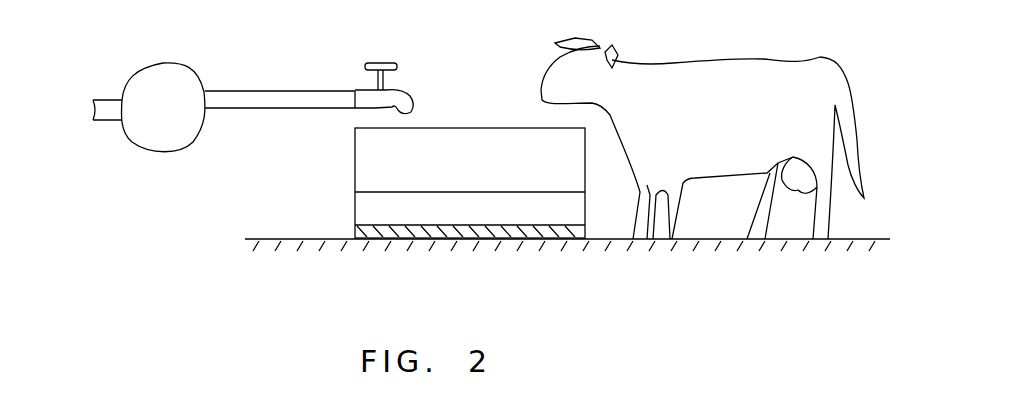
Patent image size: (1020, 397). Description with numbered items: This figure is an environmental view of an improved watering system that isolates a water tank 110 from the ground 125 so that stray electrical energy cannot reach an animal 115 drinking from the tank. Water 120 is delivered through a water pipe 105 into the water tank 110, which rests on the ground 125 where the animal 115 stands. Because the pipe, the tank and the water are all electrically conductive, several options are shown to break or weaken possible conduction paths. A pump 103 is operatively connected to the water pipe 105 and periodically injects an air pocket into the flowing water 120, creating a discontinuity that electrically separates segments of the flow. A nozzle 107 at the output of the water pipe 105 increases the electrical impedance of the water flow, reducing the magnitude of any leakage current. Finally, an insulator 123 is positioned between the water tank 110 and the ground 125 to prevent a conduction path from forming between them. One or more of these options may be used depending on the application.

The pump 103 is at (187, 108).
The water pipe 105 is at (100, 100).
The nozzle 107 is at (401, 89).
The water tank 110 is at (462, 130).
The animal 115 is at (673, 63).
The water 120 is at (372, 212).
The insulator 123 is at (500, 233).
The ground 125 is at (588, 243).